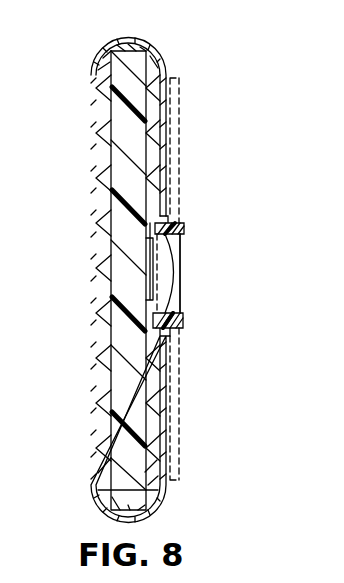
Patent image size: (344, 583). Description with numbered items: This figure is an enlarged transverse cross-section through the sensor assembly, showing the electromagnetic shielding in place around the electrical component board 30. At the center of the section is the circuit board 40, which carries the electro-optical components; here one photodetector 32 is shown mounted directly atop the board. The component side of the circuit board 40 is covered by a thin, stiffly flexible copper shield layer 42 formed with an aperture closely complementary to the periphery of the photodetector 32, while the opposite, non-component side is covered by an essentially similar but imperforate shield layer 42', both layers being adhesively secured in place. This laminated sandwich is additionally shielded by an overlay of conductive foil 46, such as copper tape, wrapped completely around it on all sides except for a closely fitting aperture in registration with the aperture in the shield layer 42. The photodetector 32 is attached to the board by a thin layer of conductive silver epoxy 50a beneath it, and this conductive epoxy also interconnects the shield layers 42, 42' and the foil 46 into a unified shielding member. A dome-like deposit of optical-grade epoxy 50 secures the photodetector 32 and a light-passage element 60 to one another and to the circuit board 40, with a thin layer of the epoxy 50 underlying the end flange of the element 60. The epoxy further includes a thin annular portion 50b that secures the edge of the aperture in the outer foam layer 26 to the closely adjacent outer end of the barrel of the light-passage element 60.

The foam layer 26 is at (177, 377).
The electrical component board 30 is at (107, 101).
The photodetector 32 is at (185, 253).
The circuit board 40 is at (122, 38).
The shield layer 42 is at (150, 274).
The shield layer 42' is at (103, 280).
The foil layer 46 is at (161, 74).
The optical-grade epoxy 50 is at (175, 286).
The conductive epoxy 50a is at (148, 277).
The annular epoxy portion 50b is at (173, 217).
The light-passage element 60 is at (183, 313).